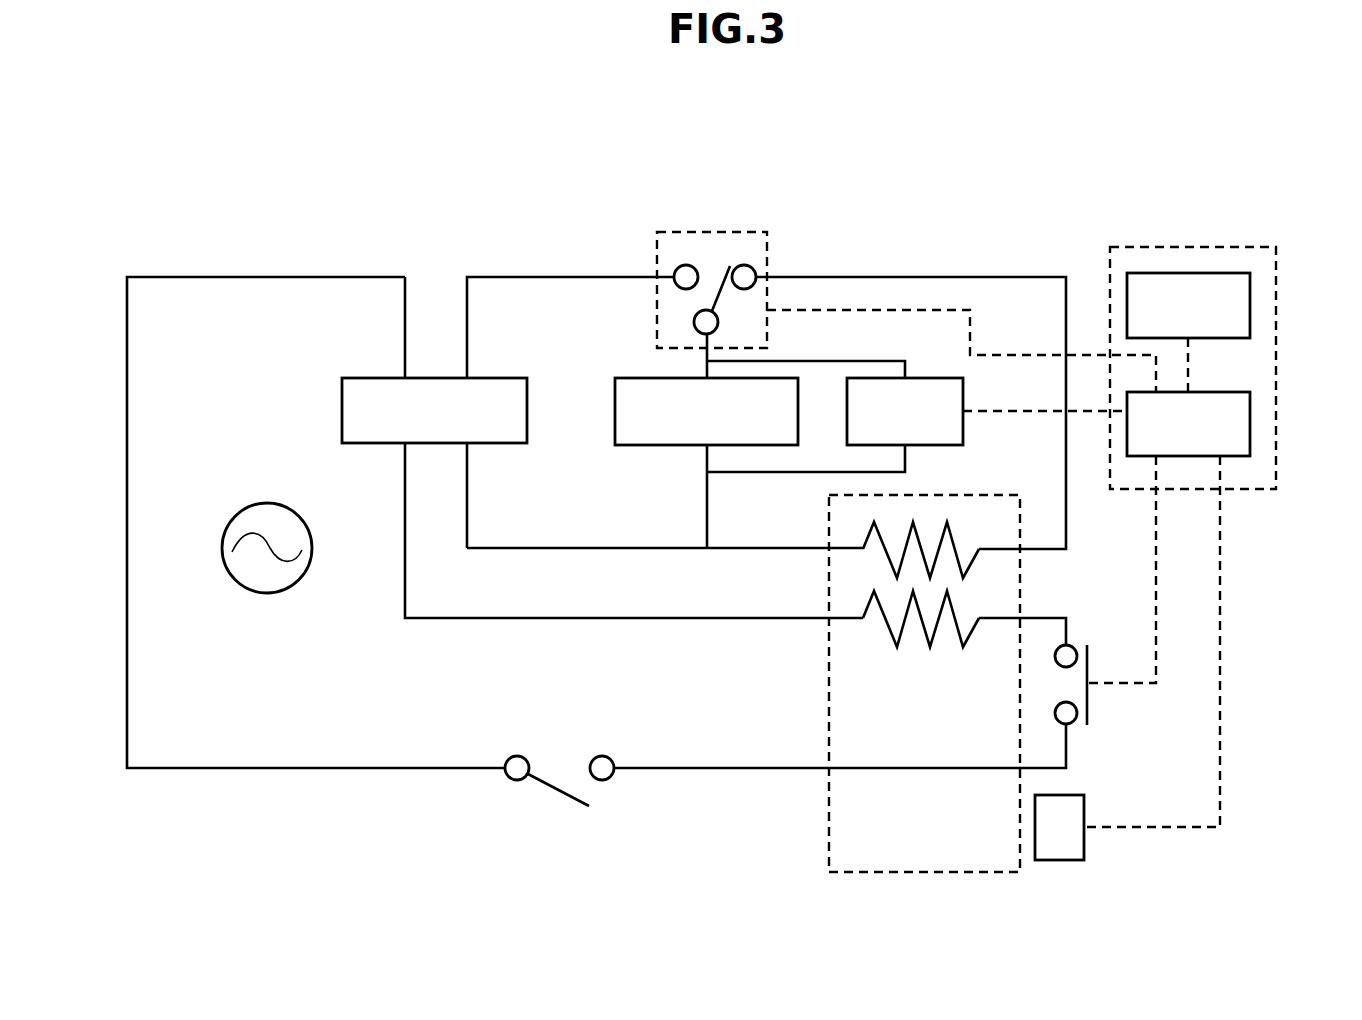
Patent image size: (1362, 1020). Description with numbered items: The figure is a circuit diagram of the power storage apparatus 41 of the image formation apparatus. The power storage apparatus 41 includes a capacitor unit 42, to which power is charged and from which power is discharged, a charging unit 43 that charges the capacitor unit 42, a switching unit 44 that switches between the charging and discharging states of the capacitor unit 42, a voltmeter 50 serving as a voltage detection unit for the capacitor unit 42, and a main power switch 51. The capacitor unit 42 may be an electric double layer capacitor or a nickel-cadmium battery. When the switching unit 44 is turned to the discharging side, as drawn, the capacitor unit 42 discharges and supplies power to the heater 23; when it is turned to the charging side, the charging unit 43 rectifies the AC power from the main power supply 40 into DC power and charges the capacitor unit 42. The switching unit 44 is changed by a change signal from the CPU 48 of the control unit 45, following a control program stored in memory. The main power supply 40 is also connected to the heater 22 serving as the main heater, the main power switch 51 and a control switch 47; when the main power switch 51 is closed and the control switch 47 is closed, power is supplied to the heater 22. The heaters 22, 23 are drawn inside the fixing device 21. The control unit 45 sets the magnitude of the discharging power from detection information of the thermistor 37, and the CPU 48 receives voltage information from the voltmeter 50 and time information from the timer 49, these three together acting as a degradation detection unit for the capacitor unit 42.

The fixing device 21 is at (940, 878).
The heater 22 is at (897, 650).
The heater 23 is at (887, 556).
The thermistor 37 is at (1084, 805).
The main power supply 40 is at (268, 594).
The power storage apparatus 41 is at (861, 256).
The capacitor unit 42 is at (657, 447).
The charging unit 43 is at (370, 445).
The switching unit 44 is at (709, 232).
The control unit 45 is at (1124, 247).
The control switch 47 is at (1089, 703).
The CPU 48 is at (1250, 422).
The timer 49 is at (1250, 300).
The voltmeter 50 is at (965, 386).
The main power switch 51 is at (560, 797).